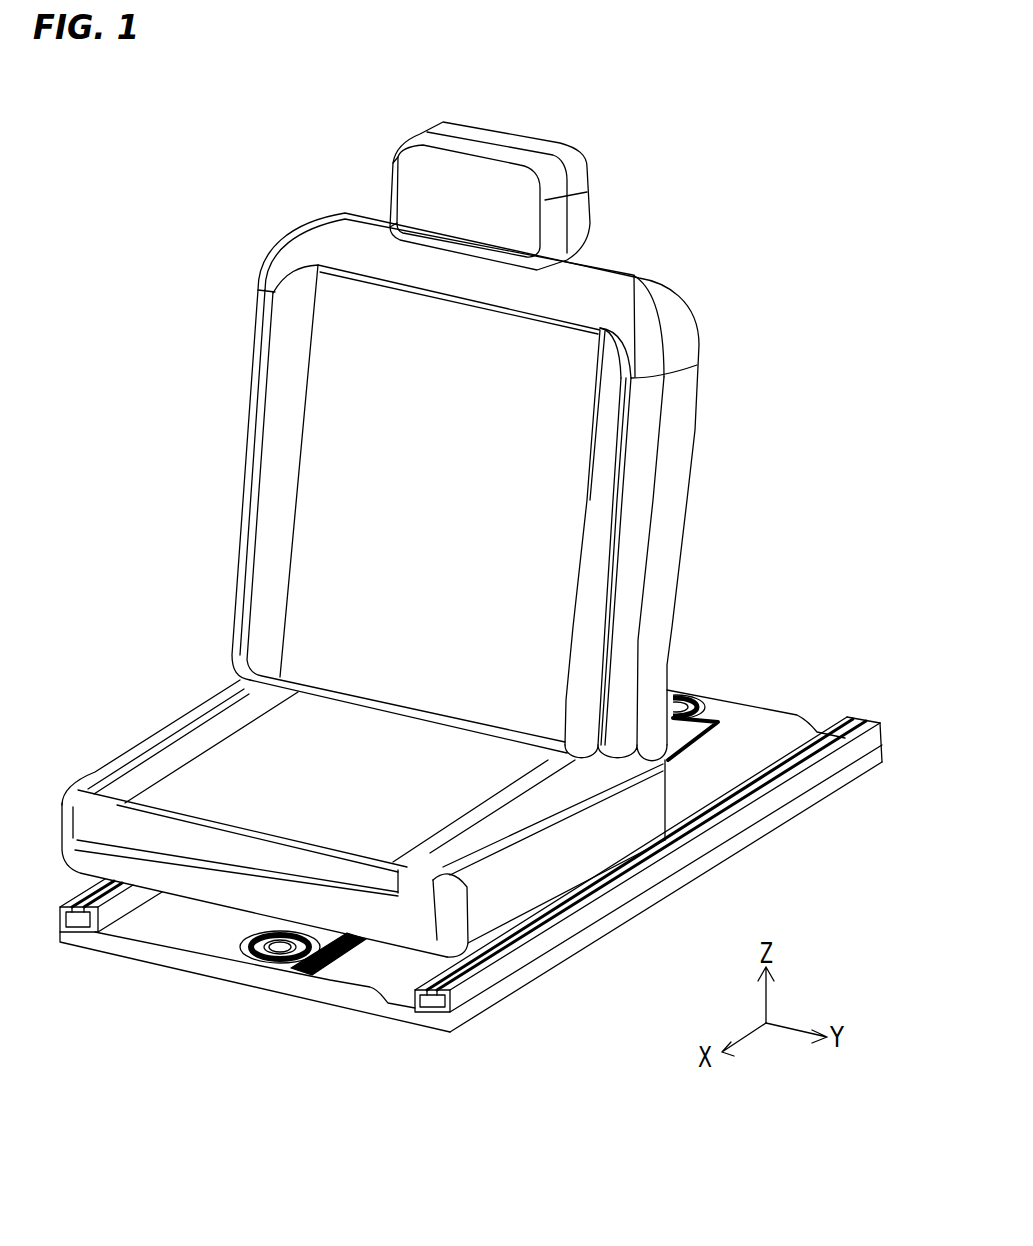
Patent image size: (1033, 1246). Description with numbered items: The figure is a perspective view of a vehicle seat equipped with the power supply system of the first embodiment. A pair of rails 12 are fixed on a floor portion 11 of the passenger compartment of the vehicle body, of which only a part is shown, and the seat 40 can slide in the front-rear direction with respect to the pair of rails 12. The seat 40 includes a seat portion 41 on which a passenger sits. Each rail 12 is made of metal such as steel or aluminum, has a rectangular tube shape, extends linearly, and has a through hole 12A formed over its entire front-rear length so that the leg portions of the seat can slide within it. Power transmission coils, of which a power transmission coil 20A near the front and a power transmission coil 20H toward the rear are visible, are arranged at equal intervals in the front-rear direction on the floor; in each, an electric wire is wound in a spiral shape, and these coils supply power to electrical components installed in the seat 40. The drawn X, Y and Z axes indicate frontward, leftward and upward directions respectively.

The floor portion 11 is at (257, 975).
The rail 12 is at (60, 917).
The through hole 12A is at (90, 925).
The power transmission coil 20A is at (240, 943).
The power transmission coil 20H is at (683, 694).
The seat 40 is at (672, 313).
The seat portion 41 is at (217, 773).